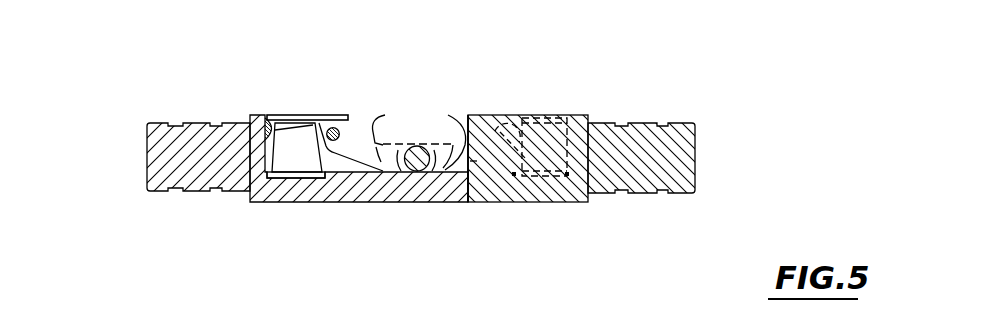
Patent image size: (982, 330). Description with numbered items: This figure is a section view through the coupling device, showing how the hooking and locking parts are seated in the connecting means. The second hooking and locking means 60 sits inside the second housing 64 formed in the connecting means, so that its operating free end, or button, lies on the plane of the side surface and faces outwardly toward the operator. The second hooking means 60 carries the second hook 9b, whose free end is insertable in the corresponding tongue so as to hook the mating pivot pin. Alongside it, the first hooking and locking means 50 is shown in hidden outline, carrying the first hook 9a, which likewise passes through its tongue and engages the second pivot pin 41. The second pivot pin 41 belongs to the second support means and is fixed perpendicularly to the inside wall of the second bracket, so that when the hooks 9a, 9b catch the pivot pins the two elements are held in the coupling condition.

The second housing 64 is at (262, 113).
The second hooking and locking means 60 is at (297, 110).
The second hook 9b is at (363, 130).
The first hook 9a is at (483, 113).
The first hooking and locking means 50 is at (557, 113).
The second pivot pin 41 is at (420, 171).